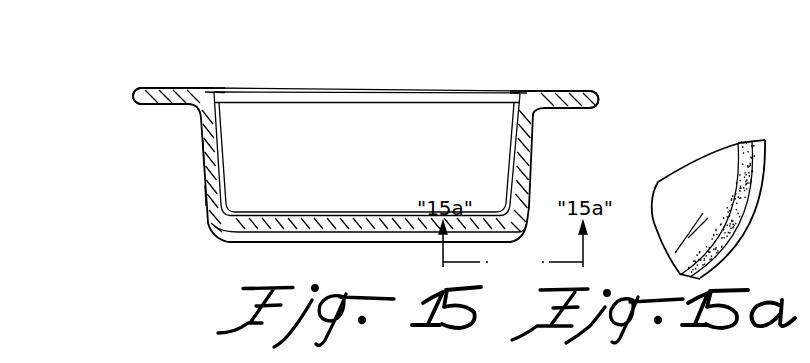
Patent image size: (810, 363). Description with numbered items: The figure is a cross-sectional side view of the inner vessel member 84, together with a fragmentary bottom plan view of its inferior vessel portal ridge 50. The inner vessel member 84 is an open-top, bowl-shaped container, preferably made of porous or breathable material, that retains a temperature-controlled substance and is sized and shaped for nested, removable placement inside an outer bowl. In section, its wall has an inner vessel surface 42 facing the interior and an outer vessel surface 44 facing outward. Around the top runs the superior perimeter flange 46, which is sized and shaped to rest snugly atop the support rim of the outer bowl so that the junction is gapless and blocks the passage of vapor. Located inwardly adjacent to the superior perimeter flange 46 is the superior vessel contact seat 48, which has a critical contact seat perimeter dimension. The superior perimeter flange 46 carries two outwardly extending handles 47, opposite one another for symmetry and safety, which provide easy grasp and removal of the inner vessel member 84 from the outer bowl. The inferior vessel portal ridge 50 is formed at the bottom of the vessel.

In FIG. 15, the inner vessel surface 42 is at (288, 125).
In FIG. 15, the outer vessel surface 44 is at (205, 200).
In FIG. 15, the superior perimeter flange 46 is at (550, 105).
In FIG. 15, the outwardly extending handle 47 is at (134, 93).
In FIG. 15, the superior vessel contact seat 48 is at (212, 96).
In FIG. 15, the inferior vessel portal ridge 50 is at (228, 238).
In FIG. 15A, the inferior vessel portal ridge 50 is at (732, 176).
In FIG. 15, the inner vessel member 84 is at (201, 152).